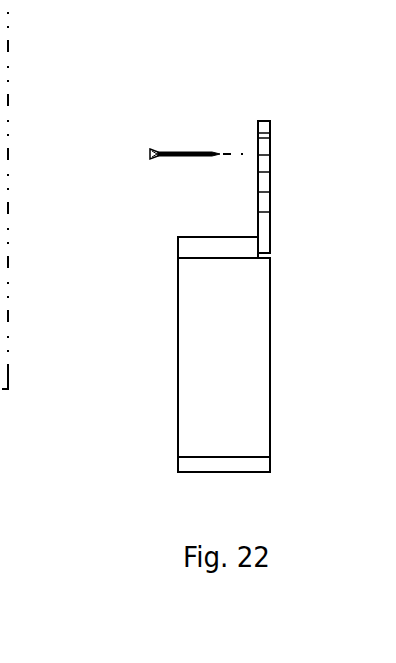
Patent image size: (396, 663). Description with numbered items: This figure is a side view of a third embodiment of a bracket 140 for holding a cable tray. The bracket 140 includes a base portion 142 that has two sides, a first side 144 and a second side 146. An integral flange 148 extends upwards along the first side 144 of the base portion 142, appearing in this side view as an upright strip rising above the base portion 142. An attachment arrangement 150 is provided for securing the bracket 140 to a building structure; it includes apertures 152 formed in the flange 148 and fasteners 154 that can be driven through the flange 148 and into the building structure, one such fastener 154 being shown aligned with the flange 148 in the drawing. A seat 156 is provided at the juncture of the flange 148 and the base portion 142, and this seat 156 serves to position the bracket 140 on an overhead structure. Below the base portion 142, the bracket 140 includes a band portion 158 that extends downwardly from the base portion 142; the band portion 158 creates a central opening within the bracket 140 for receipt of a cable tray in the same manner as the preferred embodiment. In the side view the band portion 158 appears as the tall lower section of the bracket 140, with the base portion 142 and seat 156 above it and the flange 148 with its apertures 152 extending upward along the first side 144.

The bracket 140 is at (130, 436).
The base portion 142 is at (218, 248).
The first side 144 is at (272, 248).
The second side 146 is at (178, 245).
The flange 148 is at (265, 120).
The attachment arrangement 150 is at (170, 120).
The apertures 152 is at (271, 155).
The fasteners 154 is at (190, 152).
The seat 156 is at (218, 237).
The band portion 158 is at (224, 365).